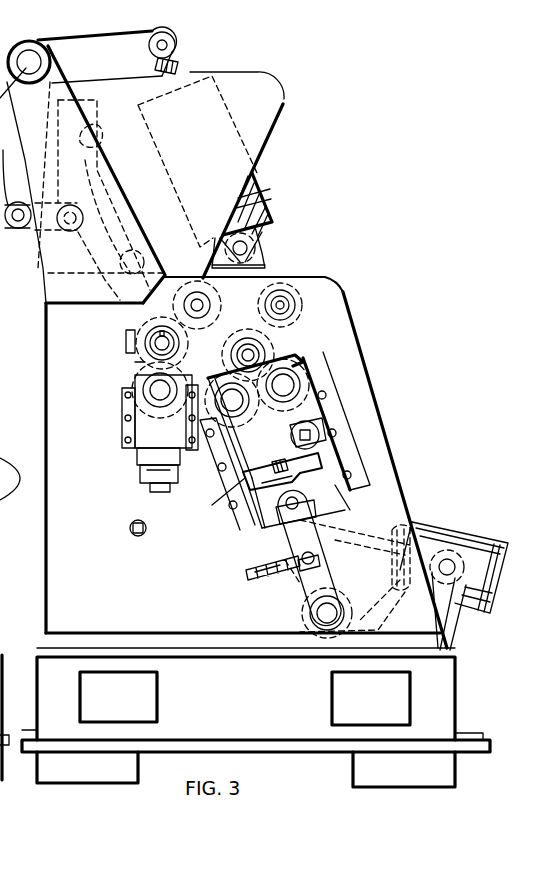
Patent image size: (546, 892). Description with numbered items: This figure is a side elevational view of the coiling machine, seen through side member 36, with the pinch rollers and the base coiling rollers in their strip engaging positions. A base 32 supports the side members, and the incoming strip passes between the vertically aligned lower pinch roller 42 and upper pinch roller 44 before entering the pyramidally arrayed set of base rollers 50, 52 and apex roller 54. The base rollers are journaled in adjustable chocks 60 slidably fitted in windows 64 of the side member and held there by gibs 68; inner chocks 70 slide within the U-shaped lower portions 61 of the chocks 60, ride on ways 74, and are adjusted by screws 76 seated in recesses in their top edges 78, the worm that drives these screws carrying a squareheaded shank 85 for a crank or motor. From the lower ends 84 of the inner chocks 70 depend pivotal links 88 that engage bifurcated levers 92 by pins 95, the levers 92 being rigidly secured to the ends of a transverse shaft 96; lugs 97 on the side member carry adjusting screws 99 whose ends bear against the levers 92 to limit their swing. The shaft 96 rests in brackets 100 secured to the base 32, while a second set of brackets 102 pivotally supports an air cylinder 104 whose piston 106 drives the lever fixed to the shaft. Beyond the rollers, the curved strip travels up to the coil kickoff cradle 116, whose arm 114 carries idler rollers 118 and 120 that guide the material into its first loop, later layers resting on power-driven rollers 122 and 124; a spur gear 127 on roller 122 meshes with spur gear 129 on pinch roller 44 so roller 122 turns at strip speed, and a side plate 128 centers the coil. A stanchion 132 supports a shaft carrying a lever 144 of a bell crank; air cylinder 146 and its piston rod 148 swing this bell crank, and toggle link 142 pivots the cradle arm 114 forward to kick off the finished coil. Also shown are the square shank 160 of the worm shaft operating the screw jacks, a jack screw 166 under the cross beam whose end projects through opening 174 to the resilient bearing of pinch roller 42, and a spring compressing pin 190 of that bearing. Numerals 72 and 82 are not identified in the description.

The base 32 is at (448, 700).
The side member 36 is at (160, 589).
The lower pinch roller 42 is at (134, 377).
The upper pinch roller 44 is at (138, 325).
The base roller 50 is at (247, 478).
The base roller 52 is at (312, 383).
The apex roller 54 is at (272, 350).
The chock 60 is at (300, 412).
The U-shaped lower portion 61 is at (262, 478).
The window 64 is at (300, 362).
The gib 68 is at (262, 500).
The inner chock 70 is at (265, 512).
The arm 72 is at (352, 512).
The way 74 is at (240, 495).
The screw 76 is at (288, 470).
The top edge 78 is at (372, 444).
The stop 82 is at (312, 434).
The lower end 84 is at (268, 548).
The squareheaded shank 85 is at (355, 416).
The pivotal link 88 is at (350, 526).
The bifurcated lever 92 is at (307, 583).
The pin 95 is at (0, 553).
The shaft 96 is at (310, 613).
The lug 97 is at (322, 573).
The adjusting screw 99 is at (256, 583).
The bracket 100 is at (302, 629).
The bracket 102 is at (452, 627).
The air cylinder 104 is at (475, 530).
The piston 106 is at (330, 560).
The cradle arm 114 is at (85, 299).
The coil kickoff cradle 116 is at (285, 74).
The idler roller 118 is at (103, 135).
The idler roller 120 is at (138, 218).
The roller 122 is at (210, 296).
The roller 124 is at (296, 307).
The spur gear 127 is at (265, 265).
The side plate 128 is at (278, 100).
The spur gear 129 is at (135, 362).
The stanchion 132 is at (18, 298).
The toggle link 142 is at (26, 68).
The lever 144 is at (107, 62).
The air cylinder 146 is at (248, 190).
The piston rod 148 is at (175, 57).
The square shank 160 is at (130, 530).
The screw 166 is at (160, 492).
The opening 174 is at (140, 470).
The spring compressing pin 190 is at (150, 483).